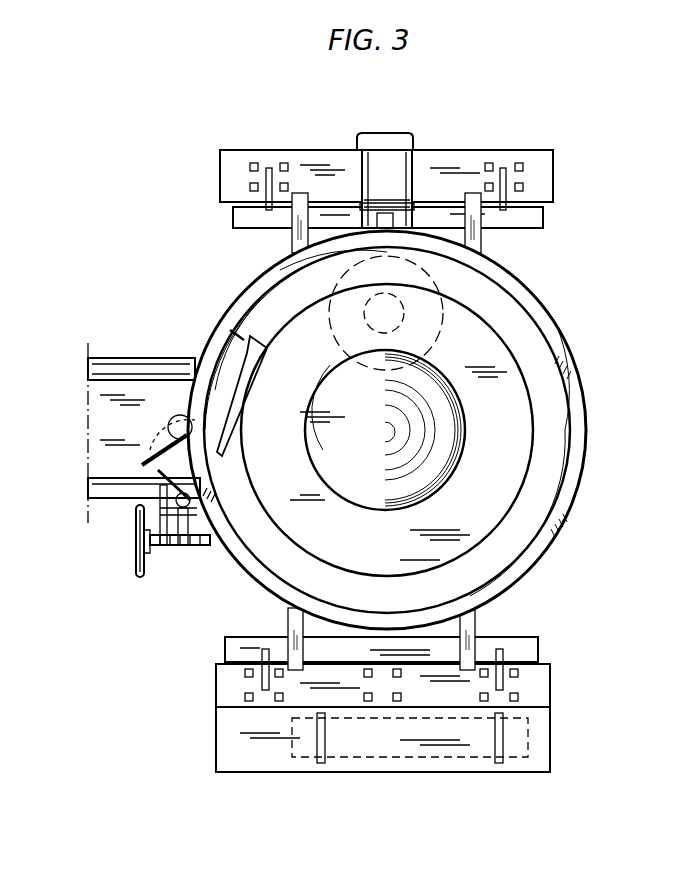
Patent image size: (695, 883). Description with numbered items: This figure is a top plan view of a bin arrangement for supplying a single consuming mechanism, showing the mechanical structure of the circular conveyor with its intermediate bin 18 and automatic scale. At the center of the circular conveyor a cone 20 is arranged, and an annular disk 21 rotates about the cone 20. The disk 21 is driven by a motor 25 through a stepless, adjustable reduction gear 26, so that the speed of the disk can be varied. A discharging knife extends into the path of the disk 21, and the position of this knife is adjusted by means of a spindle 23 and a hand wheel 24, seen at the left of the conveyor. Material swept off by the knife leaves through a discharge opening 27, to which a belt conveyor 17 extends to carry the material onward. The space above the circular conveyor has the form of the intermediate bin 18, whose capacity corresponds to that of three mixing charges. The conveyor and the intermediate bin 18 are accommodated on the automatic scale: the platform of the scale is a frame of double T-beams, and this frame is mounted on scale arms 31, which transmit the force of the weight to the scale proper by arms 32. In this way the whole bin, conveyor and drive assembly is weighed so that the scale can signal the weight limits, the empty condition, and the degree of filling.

The belt conveyor 17 is at (105, 447).
The intermediate bin 18 is at (538, 356).
The cone 20 is at (351, 478).
The annular disk 21 is at (510, 455).
The spindle 23 is at (186, 546).
The hand wheel 24 is at (135, 541).
The motor 25 is at (398, 172).
The stepless adjustable reduction gear 26 is at (440, 308).
The discharge opening 27 is at (248, 346).
The scale arm 31 is at (293, 232).
The arms 32 is at (262, 680).